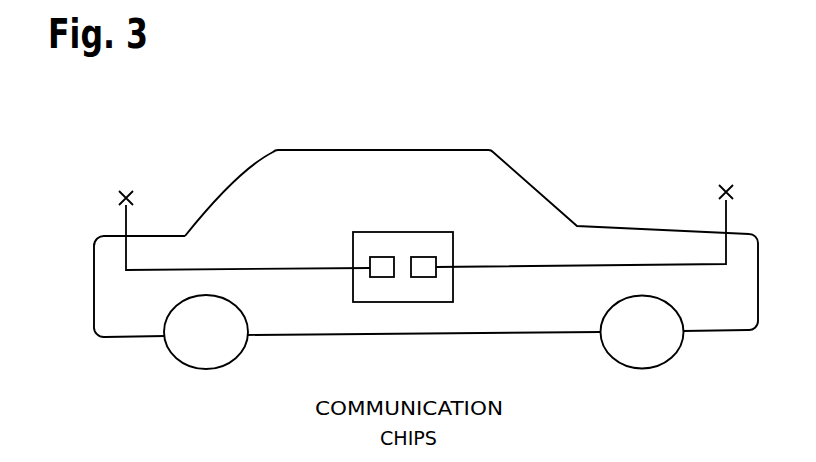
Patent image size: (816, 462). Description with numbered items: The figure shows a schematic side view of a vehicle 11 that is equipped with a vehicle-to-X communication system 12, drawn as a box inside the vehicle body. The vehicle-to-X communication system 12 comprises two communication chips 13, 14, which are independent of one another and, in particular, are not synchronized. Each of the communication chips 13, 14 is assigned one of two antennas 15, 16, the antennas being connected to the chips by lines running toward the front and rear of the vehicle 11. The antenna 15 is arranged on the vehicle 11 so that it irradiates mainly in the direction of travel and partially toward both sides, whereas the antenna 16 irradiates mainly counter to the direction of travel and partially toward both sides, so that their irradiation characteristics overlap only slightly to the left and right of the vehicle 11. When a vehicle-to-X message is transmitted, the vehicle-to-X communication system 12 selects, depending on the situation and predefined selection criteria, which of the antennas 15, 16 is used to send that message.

The vehicle 11 is at (338, 150).
The vehicle-to-X communication system 12 is at (424, 230).
The communication chip 13 is at (378, 277).
The communication chip 14 is at (428, 277).
The antenna 15 is at (729, 181).
The antenna 16 is at (128, 190).